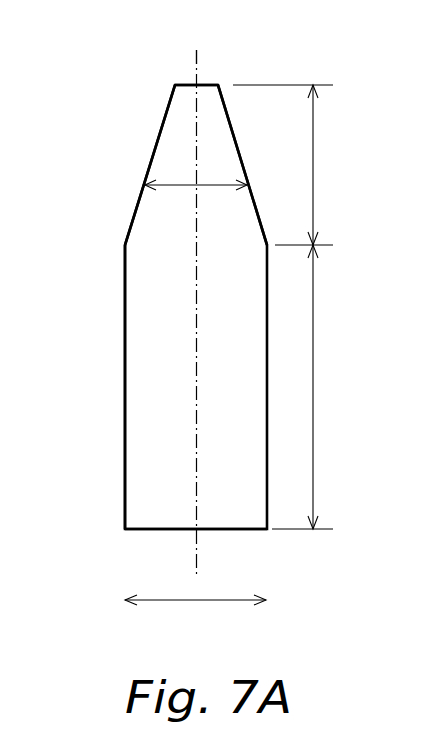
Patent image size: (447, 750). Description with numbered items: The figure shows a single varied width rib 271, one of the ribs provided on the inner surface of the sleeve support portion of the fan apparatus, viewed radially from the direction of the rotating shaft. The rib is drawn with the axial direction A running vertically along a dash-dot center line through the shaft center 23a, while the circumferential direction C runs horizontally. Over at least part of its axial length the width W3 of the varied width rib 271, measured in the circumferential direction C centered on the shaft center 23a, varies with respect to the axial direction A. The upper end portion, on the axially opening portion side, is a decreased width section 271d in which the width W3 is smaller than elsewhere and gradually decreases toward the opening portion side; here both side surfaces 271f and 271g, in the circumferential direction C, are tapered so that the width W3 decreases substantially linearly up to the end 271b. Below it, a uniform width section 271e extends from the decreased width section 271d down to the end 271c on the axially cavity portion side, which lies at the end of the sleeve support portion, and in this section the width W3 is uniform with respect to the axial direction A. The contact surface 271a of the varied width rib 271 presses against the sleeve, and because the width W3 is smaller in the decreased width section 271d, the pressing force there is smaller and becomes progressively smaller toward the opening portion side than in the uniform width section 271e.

The varied width rib 271 is at (100, 58).
The contact surface 271a is at (140, 367).
The end of varied width rib 271b is at (183, 84).
The end of varied width rib 271c is at (152, 530).
The decreased width section 271d is at (314, 200).
The uniform width section 271e is at (314, 360).
The side surface 271f is at (163, 129).
The side surface 271g is at (241, 156).
The shaft center 23a is at (198, 64).
The width W3 is at (182, 184).
The axial direction A is at (198, 563).
The circumferential direction C is at (195, 615).